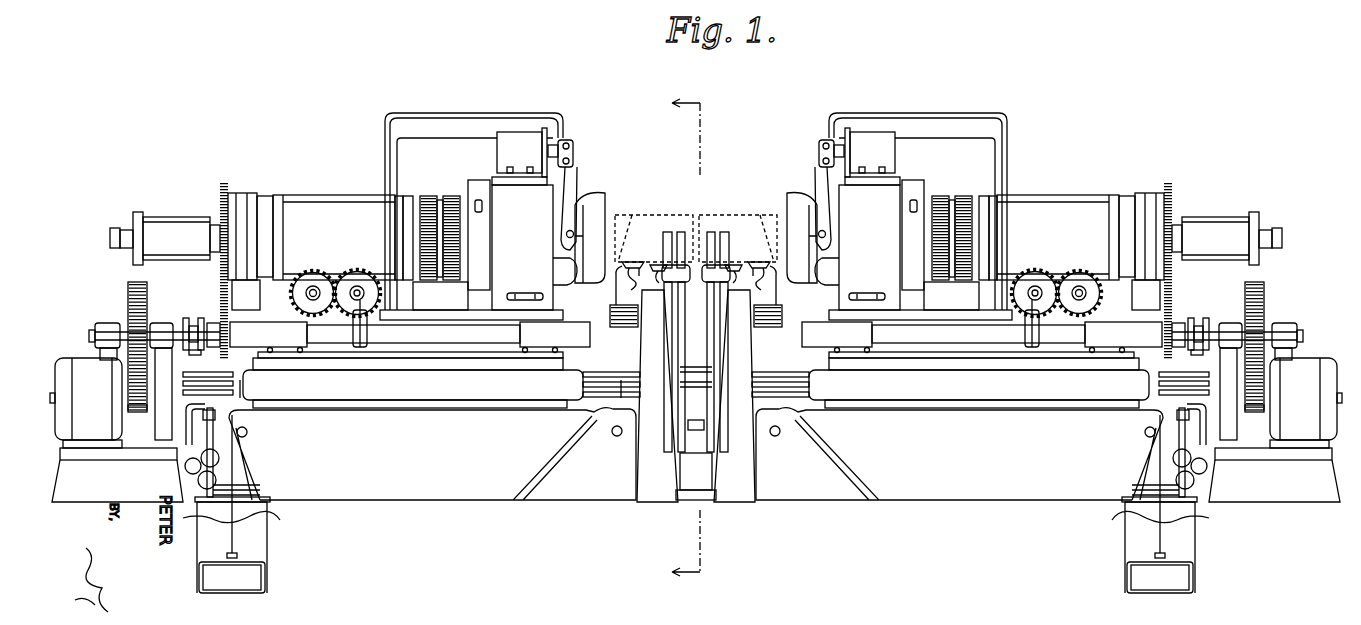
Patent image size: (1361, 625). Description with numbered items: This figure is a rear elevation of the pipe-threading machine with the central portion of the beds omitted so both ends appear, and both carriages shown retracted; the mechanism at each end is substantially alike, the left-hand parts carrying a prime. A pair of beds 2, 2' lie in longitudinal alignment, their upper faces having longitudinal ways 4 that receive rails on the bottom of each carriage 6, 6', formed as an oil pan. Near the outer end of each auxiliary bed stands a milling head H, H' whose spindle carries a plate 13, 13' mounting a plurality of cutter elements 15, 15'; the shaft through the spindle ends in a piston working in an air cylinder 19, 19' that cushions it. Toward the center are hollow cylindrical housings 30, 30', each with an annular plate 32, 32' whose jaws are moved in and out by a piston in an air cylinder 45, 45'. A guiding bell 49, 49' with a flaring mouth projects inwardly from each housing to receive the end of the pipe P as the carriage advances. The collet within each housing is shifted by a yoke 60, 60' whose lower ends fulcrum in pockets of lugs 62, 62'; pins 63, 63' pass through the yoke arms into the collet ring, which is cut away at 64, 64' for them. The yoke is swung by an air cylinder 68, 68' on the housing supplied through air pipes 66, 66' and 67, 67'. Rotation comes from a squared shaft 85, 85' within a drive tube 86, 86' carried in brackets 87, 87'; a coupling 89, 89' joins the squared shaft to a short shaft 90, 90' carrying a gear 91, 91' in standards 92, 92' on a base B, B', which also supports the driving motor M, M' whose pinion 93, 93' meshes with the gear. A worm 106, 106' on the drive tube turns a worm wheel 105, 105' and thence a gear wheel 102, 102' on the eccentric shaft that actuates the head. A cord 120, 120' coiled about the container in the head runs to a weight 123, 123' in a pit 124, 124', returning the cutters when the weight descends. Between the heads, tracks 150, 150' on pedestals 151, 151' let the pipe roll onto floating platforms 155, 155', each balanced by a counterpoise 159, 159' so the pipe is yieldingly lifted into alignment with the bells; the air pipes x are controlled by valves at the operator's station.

The bed 2 is at (432, 454).
The bed 2' is at (959, 454).
The longitudinal ways 4 is at (698, 339).
The carriage 6 is at (413, 389).
The carriage 6' is at (979, 389).
The plate 13 is at (426, 226).
The plate 13' is at (968, 226).
The cutter elements 15 is at (440, 241).
The cutter elements 15' is at (951, 241).
The air cylinder 19 is at (165, 238).
The air cylinder 19' is at (1227, 238).
The hollow cylindrical housing 30 is at (522, 243).
The hollow cylindrical housing 30' is at (869, 243).
The annular plate 32 is at (475, 220).
The annular plate 32' is at (918, 220).
The air cylinder 45 is at (511, 286).
The air cylinder 45' is at (880, 286).
The guiding bell 49 is at (591, 225).
The guiding bell 49' is at (799, 225).
The yoke 60 is at (587, 195).
The yoke 60' is at (804, 195).
The lugs 62 is at (547, 271).
The lugs 62' is at (846, 271).
The pins 63 is at (602, 211).
The pins 63' is at (788, 211).
The cut-away portion 64 is at (591, 244).
The cut-away portion 64' is at (800, 244).
The air pipe 66 is at (475, 224).
The air pipe 66' is at (917, 224).
The air pipe 67 is at (474, 200).
The air pipe 67' is at (918, 200).
The air cylinder 68 is at (518, 133).
The air cylinder 68' is at (876, 133).
The squared shaft 85 is at (194, 359).
The squared shaft 85' is at (1198, 359).
The drive tube 86 is at (408, 366).
The drive tube 86' is at (984, 366).
The brackets 87 is at (410, 334).
The brackets 87' is at (982, 334).
The coupling 89 is at (201, 321).
The coupling 89' is at (1191, 321).
The short shaft 90 is at (141, 325).
The short shaft 90' is at (1253, 325).
The gear 91 is at (149, 346).
The gear 91' is at (1241, 346).
The standards 92 is at (132, 368).
The standards 92' is at (1260, 368).
The pinion 93 is at (143, 442).
The pinion 93' is at (1249, 442).
The gear wheel 102 is at (313, 282).
The gear wheel 102' is at (1079, 282).
The worm wheel 105 is at (357, 293).
The worm wheel 105' is at (1035, 293).
The worm 106 is at (345, 344).
The worm 106' is at (1048, 344).
The cord 120 is at (272, 496).
The cord 120' is at (1119, 496).
The weight 123 is at (232, 577).
The weight 123' is at (1160, 577).
The pit 124 is at (250, 547).
The pit 124' is at (1141, 547).
The tracks 150 is at (638, 271).
The tracks 150' is at (754, 271).
The pedestals 151 is at (657, 396).
The pedestals 151' is at (734, 396).
The floating platforms 155 is at (622, 282).
The floating platforms 155' is at (771, 282).
The counterpoise 159 is at (606, 314).
The counterpoise 159' is at (788, 314).
The base B is at (117, 475).
The base B' is at (1274, 475).
The milling head H is at (318, 261).
The milling head H' is at (1073, 261).
The driving motor M is at (86, 403).
The driving motor M' is at (1306, 403).
The pipe P is at (702, 214).
The air pipes x is at (621, 380).